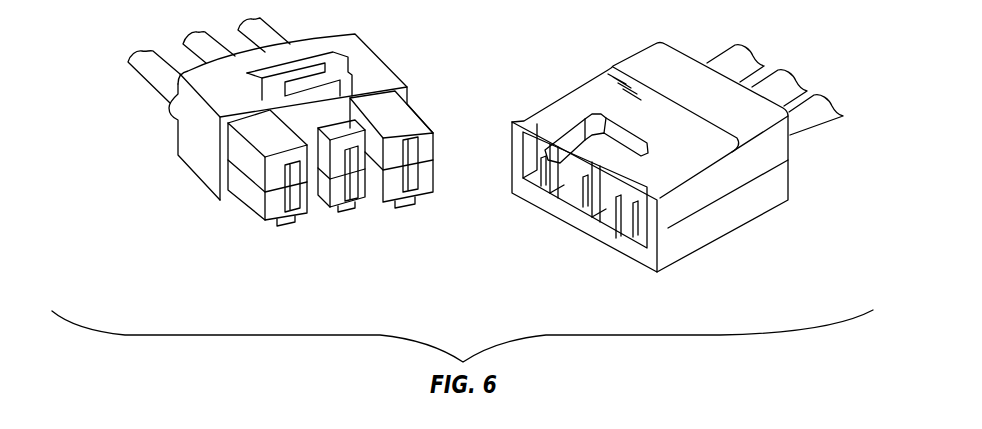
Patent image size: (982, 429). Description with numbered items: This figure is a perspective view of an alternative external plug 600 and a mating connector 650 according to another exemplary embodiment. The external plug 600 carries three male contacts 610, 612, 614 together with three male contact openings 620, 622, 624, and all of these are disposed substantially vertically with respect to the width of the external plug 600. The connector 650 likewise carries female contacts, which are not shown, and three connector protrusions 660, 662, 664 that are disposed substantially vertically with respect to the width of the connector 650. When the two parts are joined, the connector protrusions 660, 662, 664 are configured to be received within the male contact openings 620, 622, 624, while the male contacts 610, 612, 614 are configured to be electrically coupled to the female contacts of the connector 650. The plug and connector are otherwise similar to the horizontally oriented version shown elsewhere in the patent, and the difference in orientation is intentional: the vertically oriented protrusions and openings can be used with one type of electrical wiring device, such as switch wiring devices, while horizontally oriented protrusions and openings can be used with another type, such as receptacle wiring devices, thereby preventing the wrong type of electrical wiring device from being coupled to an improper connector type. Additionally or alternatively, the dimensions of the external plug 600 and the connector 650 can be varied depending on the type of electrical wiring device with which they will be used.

The external plug 600 is at (763, 192).
The male contact 610 is at (515, 187).
The male contact 612 is at (615, 184).
The male contact 614 is at (640, 212).
The male contact opening 620 is at (550, 170).
The male contact opening 622 is at (590, 185).
The male contact opening 624 is at (620, 242).
The connector 650 is at (190, 153).
The connector protrusion 660 is at (410, 205).
The connector protrusion 662 is at (350, 215).
The connector protrusion 664 is at (290, 223).